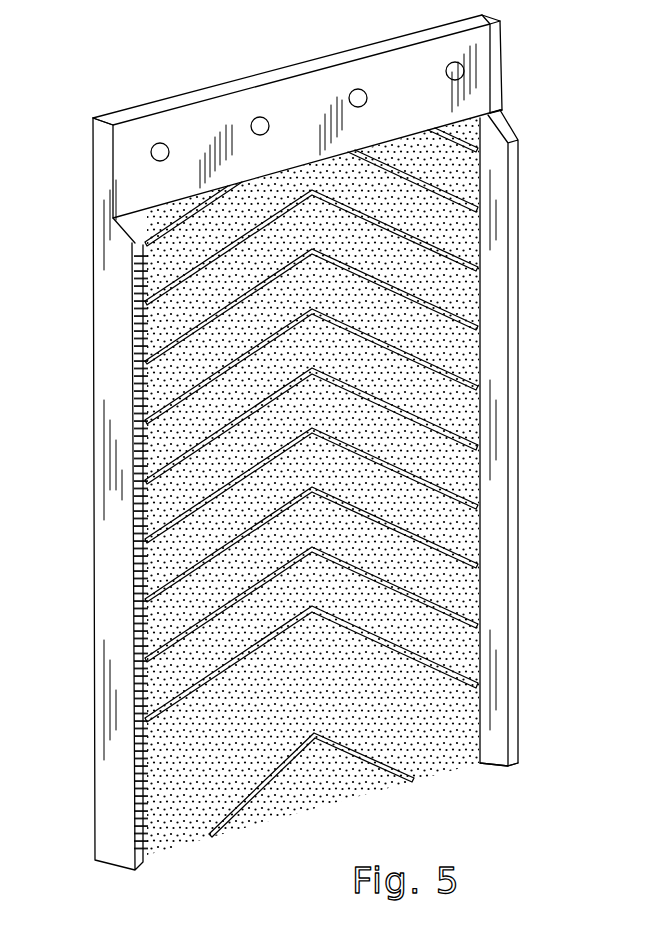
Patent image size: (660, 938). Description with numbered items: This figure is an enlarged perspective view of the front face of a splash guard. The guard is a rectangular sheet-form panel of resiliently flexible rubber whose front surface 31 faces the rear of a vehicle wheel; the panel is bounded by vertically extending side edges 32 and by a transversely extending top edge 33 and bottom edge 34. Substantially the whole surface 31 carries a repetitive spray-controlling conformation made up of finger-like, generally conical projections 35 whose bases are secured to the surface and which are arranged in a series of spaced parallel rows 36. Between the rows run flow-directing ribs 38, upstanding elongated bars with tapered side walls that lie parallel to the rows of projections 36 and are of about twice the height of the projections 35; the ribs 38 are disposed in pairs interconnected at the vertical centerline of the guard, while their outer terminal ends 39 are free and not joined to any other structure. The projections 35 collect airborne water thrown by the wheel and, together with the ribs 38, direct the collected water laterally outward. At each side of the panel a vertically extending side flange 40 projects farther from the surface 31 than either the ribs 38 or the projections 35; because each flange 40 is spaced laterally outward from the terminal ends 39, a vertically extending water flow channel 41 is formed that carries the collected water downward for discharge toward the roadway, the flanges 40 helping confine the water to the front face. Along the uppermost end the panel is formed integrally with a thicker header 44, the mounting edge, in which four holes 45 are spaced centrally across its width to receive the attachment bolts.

The surface 31 is at (480, 762).
The side edges 32 is at (93, 496).
The top edge 33 is at (252, 82).
The bottom edge 34 is at (197, 843).
The projections 35 is at (462, 294).
The rows 36 is at (144, 376).
The flow-directing ribs 38 is at (478, 384).
The outer terminal ends 39 is at (481, 331).
The side flanges 40 is at (520, 458).
The water flow channel 41 is at (478, 522).
The header 44 is at (490, 57).
The holes 45 is at (446, 72).